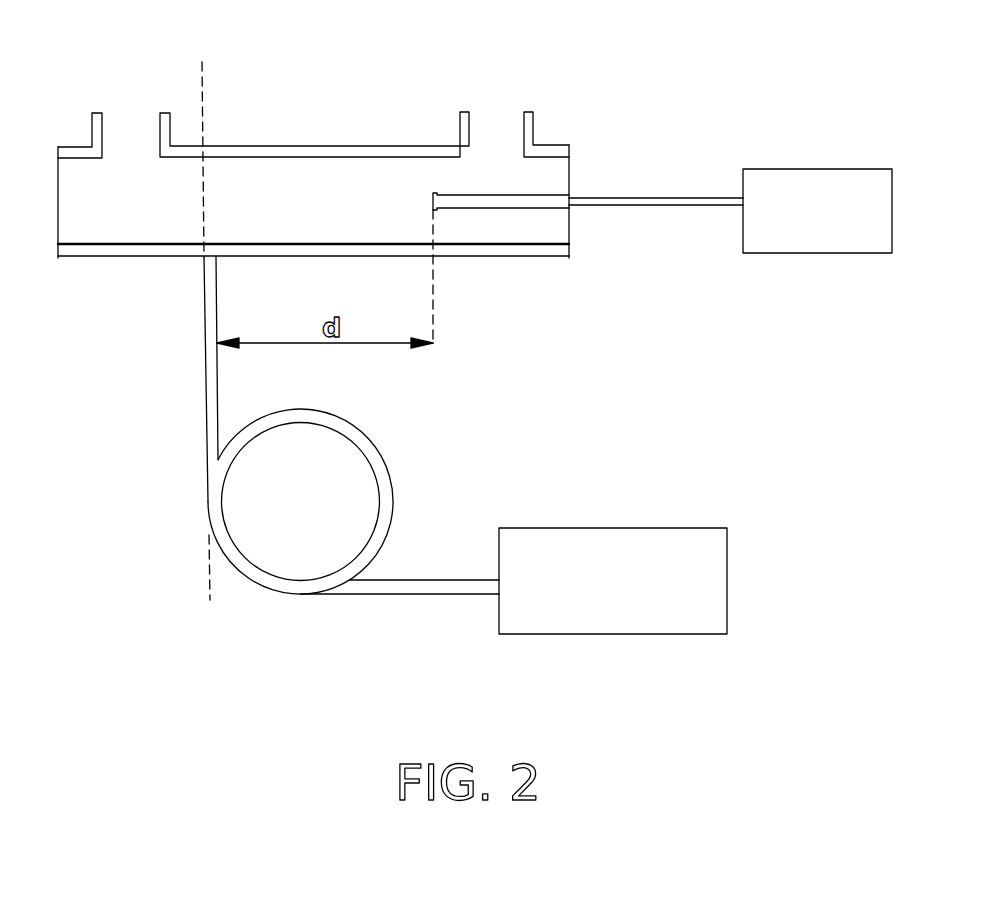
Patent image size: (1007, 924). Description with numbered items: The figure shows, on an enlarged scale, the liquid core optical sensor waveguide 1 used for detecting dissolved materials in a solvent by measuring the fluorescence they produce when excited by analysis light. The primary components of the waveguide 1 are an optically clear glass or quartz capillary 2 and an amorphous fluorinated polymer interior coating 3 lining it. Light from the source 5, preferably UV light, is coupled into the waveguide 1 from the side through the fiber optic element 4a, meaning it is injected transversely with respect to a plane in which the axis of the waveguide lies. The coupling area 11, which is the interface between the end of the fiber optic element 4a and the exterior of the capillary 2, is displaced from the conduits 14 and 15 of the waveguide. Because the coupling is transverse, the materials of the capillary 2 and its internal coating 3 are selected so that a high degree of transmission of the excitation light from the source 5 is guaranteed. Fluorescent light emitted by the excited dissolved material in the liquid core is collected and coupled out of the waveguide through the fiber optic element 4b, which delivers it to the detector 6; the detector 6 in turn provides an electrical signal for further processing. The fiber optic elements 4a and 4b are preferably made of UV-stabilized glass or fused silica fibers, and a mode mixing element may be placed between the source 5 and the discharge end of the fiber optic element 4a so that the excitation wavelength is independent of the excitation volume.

The liquid core waveguide 1 is at (268, 133).
The capillary 2 is at (303, 145).
The amorphous fluorinated polymer interior coating 3 is at (311, 237).
The fiber optic element 4a is at (412, 518).
The fiber optic element 4b is at (655, 212).
The light source 5 is at (590, 613).
The detector 6 is at (800, 169).
The coupling area 11 is at (183, 258).
The conduit 14 is at (133, 123).
The conduit 15 is at (503, 107).